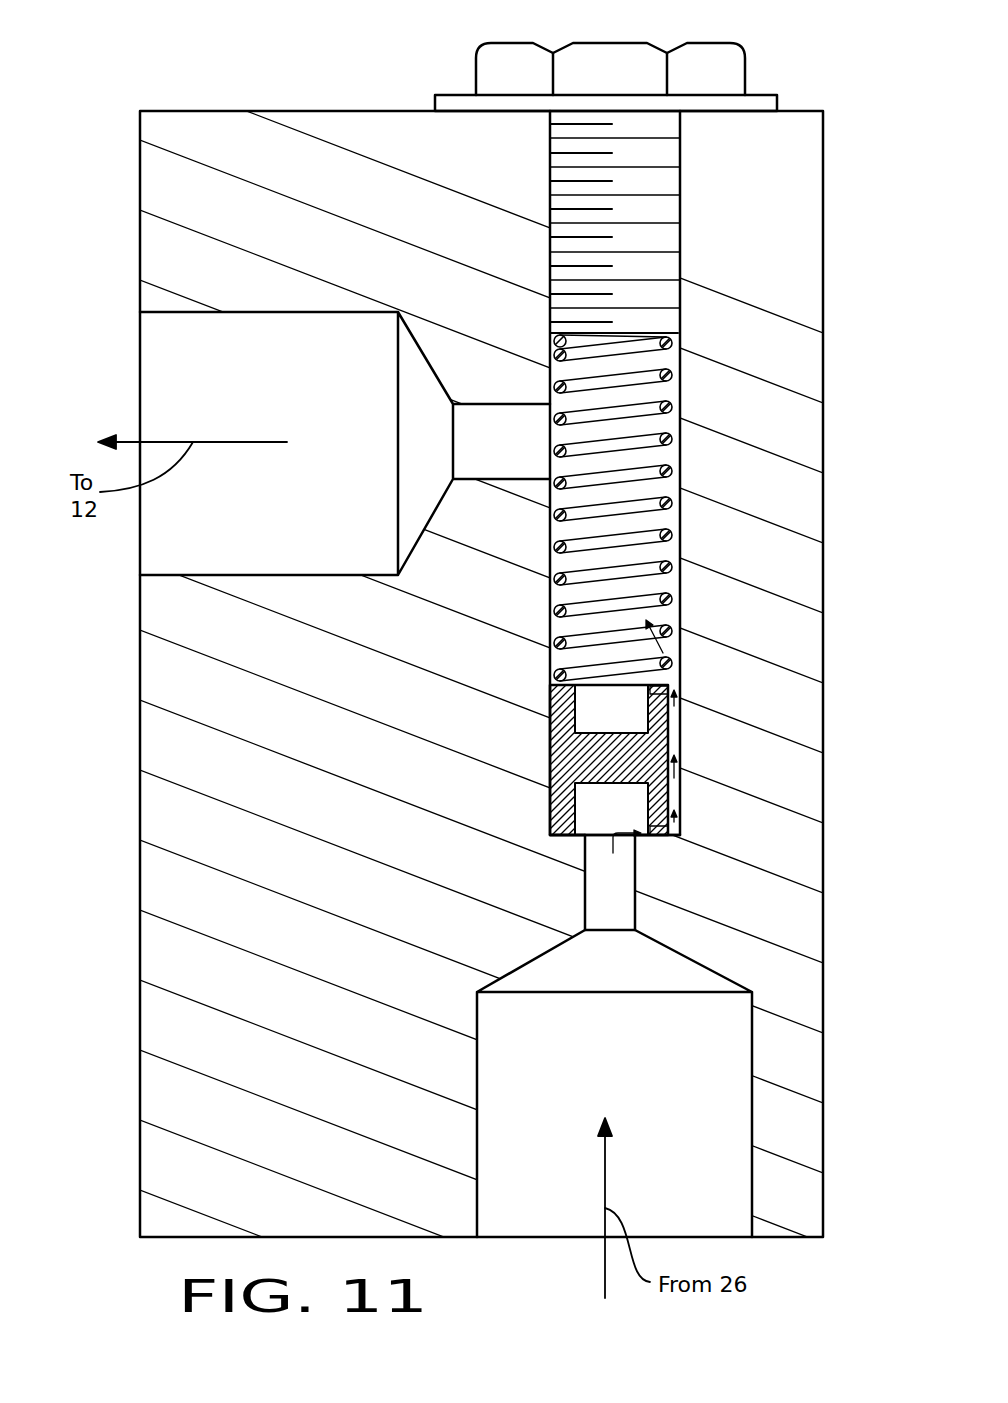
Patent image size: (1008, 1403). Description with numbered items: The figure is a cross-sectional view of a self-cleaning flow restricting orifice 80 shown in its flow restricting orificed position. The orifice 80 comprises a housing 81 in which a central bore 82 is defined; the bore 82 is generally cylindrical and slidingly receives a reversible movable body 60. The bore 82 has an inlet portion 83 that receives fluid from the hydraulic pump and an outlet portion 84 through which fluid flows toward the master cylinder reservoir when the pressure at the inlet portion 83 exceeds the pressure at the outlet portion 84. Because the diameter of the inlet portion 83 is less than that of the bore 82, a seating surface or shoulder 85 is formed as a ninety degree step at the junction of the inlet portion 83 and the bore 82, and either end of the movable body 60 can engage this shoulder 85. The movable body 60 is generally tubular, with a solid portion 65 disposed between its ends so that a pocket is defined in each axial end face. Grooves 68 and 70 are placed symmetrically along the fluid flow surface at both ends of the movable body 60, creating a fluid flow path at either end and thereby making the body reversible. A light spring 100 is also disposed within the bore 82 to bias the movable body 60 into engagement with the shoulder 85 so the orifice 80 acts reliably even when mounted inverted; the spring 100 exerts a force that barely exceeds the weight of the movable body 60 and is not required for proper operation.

The flow restricting orifice 80 is at (310, 96).
The housing 81 is at (205, 262).
The central bore 82 is at (663, 362).
The light spring 100 is at (665, 440).
The outlet portion 84 is at (500, 453).
The solid portion 65 is at (553, 752).
The movable body 60 is at (613, 702).
The groove 70 is at (656, 686).
The groove 68 is at (680, 697).
The shoulder 85 is at (557, 838).
The inlet portion 83 is at (618, 906).